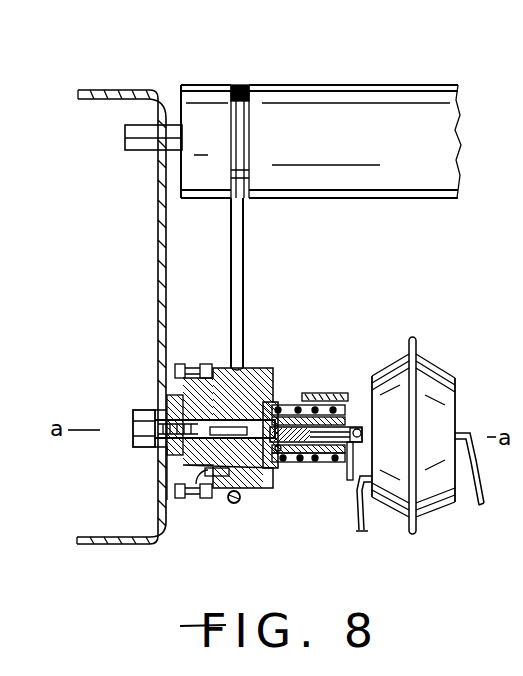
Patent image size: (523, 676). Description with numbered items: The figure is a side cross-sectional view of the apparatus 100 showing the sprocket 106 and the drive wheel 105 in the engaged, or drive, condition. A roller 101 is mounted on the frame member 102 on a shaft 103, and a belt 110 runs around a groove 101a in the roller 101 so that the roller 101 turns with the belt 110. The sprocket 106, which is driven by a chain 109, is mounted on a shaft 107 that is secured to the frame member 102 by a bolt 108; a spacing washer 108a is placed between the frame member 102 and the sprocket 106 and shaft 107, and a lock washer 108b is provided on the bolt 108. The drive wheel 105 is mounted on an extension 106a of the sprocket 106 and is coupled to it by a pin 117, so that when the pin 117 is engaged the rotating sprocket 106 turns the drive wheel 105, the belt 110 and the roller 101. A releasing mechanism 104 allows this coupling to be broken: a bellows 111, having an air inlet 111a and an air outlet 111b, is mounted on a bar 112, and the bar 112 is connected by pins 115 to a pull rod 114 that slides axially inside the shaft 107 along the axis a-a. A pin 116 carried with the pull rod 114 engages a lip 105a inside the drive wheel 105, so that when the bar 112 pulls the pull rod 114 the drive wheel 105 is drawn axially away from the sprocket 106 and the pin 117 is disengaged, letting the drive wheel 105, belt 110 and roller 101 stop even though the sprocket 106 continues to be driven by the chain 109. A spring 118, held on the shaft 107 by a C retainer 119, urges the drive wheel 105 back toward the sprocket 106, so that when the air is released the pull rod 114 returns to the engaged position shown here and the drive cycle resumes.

The apparatus 100 is at (352, 78).
The roller 101 is at (410, 145).
The groove 101a is at (248, 88).
The frame member 102 is at (158, 249).
The shaft 103 is at (126, 140).
The releasing mechanism 104 is at (287, 513).
The drive wheel 105 is at (255, 385).
The lip 105a is at (280, 455).
The sprocket 106 is at (160, 400).
The extension 106a is at (262, 382).
The shaft 107 is at (273, 388).
The bolt 108 is at (135, 432).
The spacing washer 108a is at (156, 482).
The lock washer 108b is at (155, 457).
The chain 109 is at (182, 365).
The belt 110 is at (243, 254).
The bellows 111 is at (432, 392).
The air inlet 111a is at (480, 500).
The air outlet 111b is at (372, 514).
The bar 112 is at (311, 393).
The pull rod 114 is at (358, 400).
The pin 115 is at (361, 435).
The pin 116 is at (258, 498).
The pin 117 is at (192, 497).
The spring 118 is at (330, 470).
The C retainer 119 is at (361, 447).